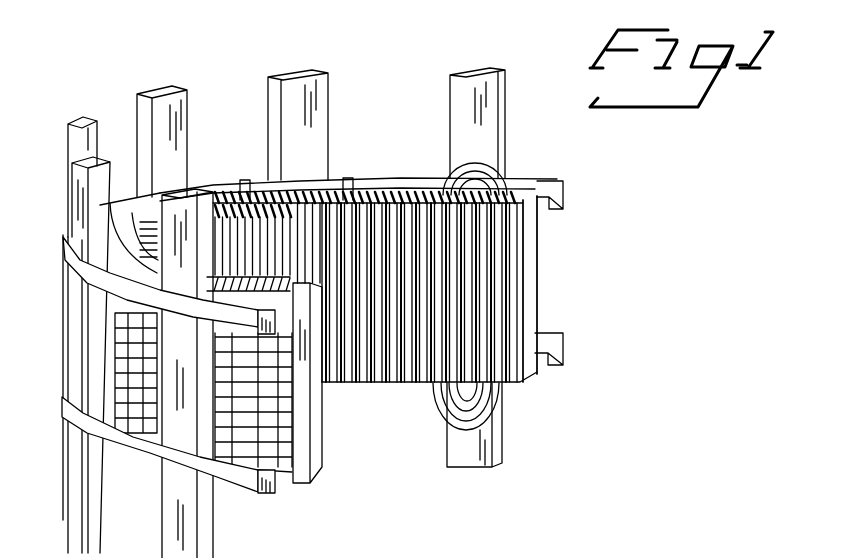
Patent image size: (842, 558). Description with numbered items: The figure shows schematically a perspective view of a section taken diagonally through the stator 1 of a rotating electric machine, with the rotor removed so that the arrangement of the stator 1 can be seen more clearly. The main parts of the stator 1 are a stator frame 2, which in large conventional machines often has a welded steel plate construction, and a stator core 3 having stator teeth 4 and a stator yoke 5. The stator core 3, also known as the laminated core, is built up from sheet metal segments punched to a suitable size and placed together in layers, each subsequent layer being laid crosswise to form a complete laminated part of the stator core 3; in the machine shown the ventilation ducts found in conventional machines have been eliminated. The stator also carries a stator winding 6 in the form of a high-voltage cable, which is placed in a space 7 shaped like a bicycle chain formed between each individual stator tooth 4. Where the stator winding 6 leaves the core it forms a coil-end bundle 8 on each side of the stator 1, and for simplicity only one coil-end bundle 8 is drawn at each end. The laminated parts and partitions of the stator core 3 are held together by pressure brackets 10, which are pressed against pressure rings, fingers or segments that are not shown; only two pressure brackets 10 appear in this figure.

The stator 1 is at (603, 378).
The stator frame 2 is at (225, 493).
The stator core 3 is at (303, 407).
The stator tooth 4 is at (510, 367).
The stator yoke 5 is at (533, 280).
The stator winding 6 is at (460, 175).
The space 7 is at (413, 193).
The coil-end bundle 8 is at (503, 422).
The pressure bracket 10 is at (248, 177).